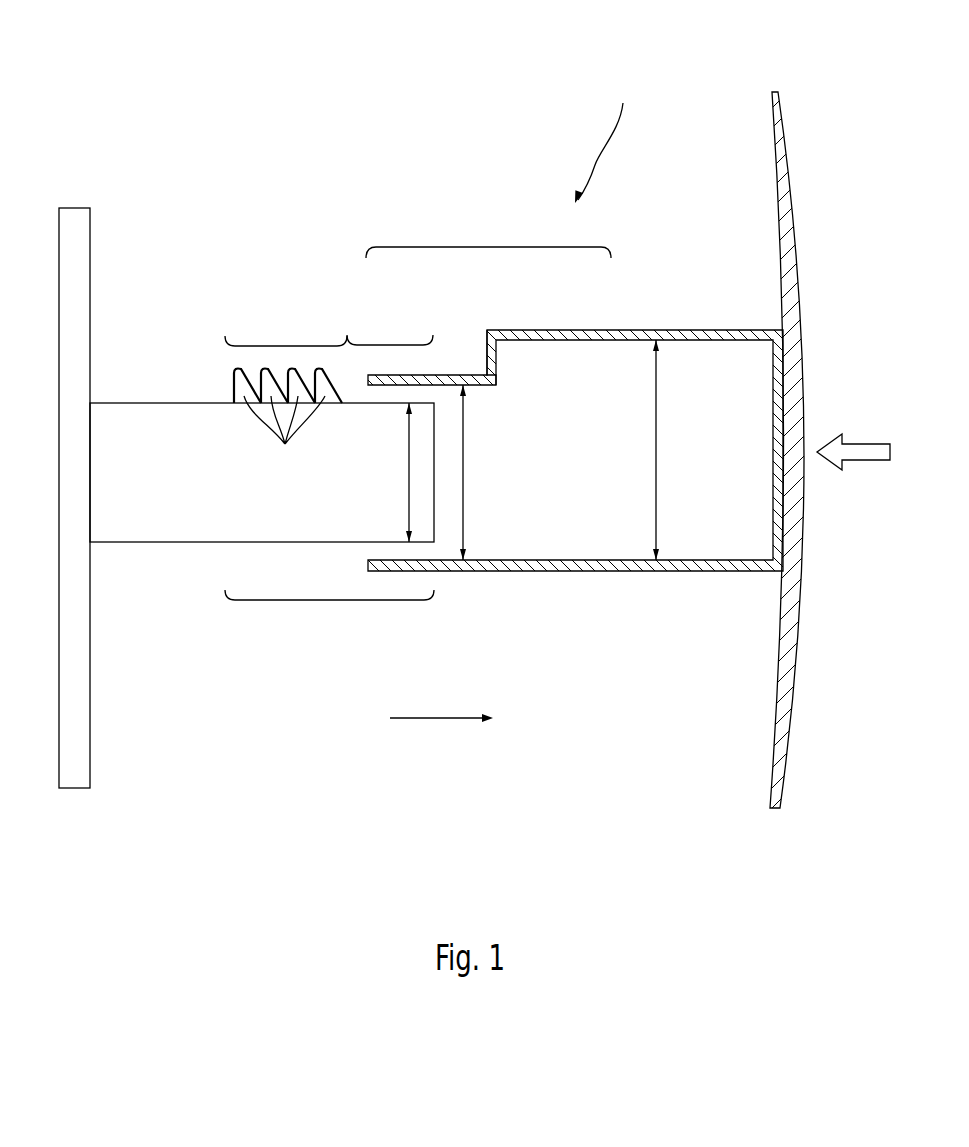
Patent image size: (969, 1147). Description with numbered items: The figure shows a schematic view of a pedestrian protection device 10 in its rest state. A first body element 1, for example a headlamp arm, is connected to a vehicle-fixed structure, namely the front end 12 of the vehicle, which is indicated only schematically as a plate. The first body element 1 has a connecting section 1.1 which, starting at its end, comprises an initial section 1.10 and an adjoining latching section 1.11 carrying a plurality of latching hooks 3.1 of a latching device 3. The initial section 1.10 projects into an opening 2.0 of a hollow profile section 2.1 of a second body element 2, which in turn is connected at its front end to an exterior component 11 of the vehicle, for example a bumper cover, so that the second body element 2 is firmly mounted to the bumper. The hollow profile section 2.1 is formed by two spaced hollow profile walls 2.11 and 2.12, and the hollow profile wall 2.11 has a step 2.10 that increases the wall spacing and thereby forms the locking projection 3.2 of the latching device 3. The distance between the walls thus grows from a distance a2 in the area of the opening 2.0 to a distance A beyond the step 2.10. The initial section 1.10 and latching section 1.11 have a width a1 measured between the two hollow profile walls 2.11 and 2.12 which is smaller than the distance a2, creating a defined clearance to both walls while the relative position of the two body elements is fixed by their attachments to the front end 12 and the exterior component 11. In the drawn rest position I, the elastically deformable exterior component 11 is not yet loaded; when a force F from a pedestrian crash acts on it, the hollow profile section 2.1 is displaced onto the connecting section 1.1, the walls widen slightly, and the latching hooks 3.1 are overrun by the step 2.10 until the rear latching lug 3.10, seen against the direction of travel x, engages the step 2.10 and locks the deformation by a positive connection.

The pedestrian protection device 10 is at (222, 143).
The front end 12 is at (75, 218).
The exterior component 11 is at (785, 176).
The first body element 1 is at (167, 480).
The connecting section 1.1 is at (336, 600).
The initial section 1.10 is at (387, 345).
The latching section 1.11 is at (287, 346).
The second body element 2 is at (721, 463).
The opening 2.0 is at (368, 551).
The hollow profile section 2.1 is at (490, 247).
The step 2.10 is at (495, 358).
The hollow profile wall 2.11 is at (626, 330).
The hollow profile wall 2.12 is at (620, 572).
The latching device 3 is at (347, 322).
The latching hooks 3.1 is at (284, 437).
The rear latching lug 3.10 is at (233, 385).
The locking projection 3.2 is at (497, 378).
The width a1 is at (409, 477).
The distance a2 is at (463, 477).
The distance A is at (656, 457).
The rest position I is at (601, 135).
The force F is at (866, 440).
The x direction x is at (434, 724).